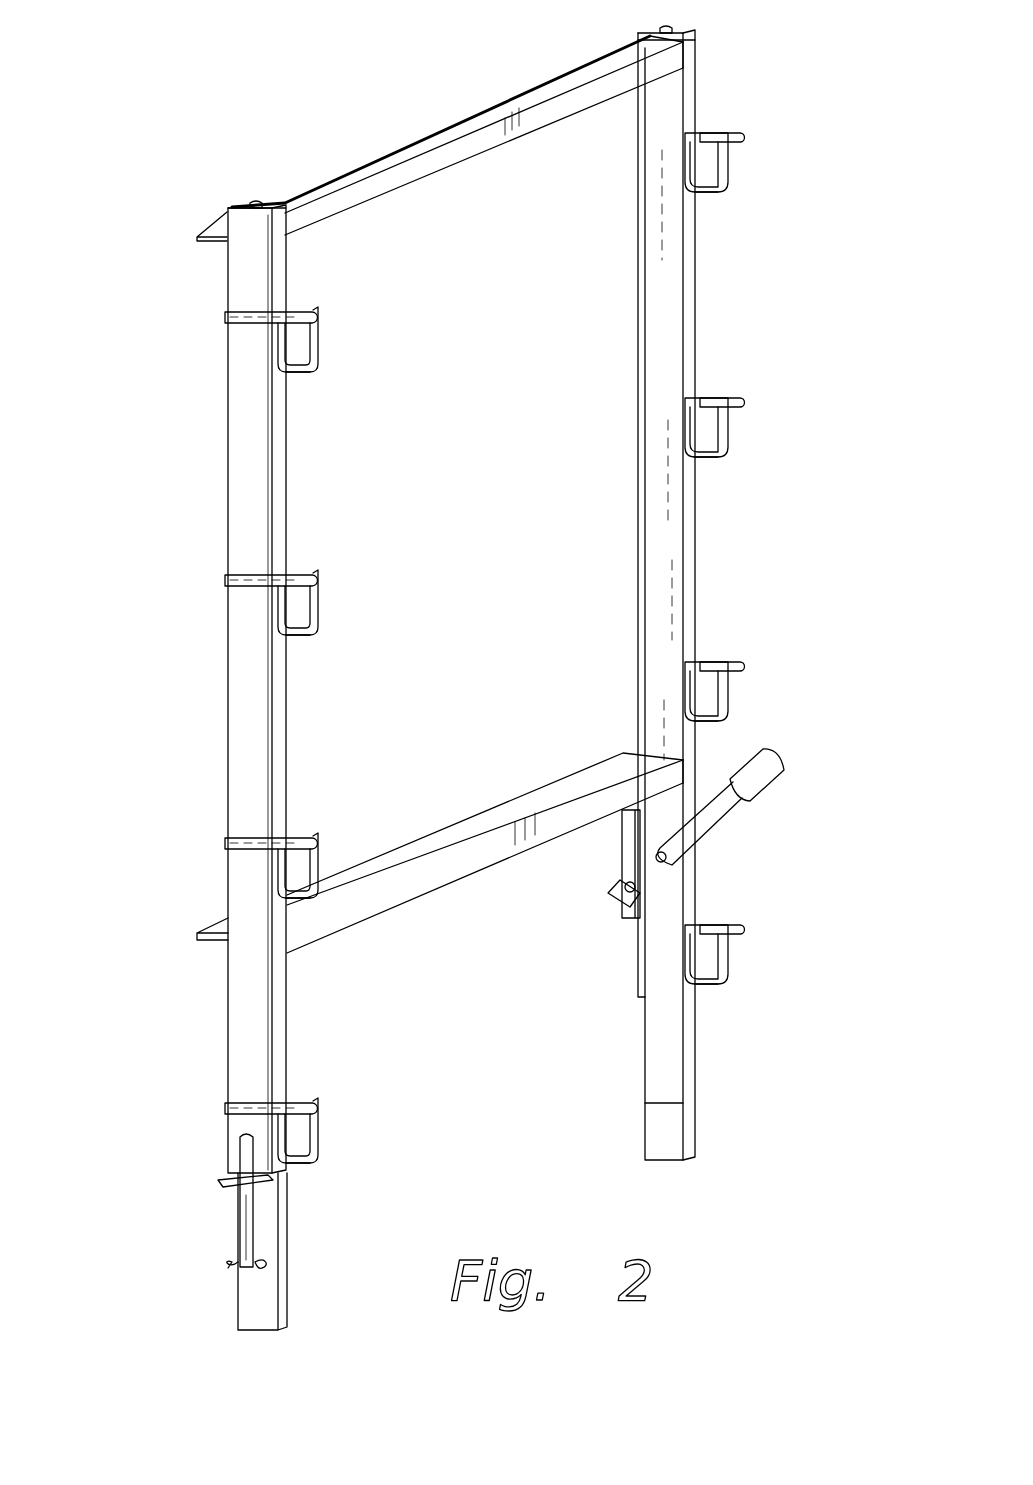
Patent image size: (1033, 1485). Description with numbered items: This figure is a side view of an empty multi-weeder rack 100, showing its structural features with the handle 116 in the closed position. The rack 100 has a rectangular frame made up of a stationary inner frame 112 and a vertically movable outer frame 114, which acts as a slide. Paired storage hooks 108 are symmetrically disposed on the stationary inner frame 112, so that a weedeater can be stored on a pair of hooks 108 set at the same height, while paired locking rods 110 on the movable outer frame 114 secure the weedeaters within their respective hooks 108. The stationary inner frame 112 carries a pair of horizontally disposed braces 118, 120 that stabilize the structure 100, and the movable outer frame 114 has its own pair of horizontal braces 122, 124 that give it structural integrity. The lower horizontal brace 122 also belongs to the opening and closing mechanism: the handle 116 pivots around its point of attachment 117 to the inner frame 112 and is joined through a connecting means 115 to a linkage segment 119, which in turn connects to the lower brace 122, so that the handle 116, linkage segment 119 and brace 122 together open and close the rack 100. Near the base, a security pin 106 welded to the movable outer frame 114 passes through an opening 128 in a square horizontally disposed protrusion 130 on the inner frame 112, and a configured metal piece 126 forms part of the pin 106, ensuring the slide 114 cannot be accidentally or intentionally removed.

The multi-weeder rack 100 is at (200, 556).
The security pin 106 is at (245, 1228).
The storage hook 108 is at (320, 1125).
The locking rod 110 is at (735, 935).
The stationary inner frame 112 is at (665, 1128).
The vertically movable outer frame 114 is at (232, 805).
The connecting means 115 is at (612, 893).
The handle 116 is at (765, 770).
The point of attachment 117 is at (672, 850).
The horizontal brace 118 is at (375, 905).
The linkage segment 119 is at (628, 855).
The horizontal brace 120 is at (375, 188).
The lower horizontal brace 122 is at (213, 930).
The horizontal brace 124 is at (213, 236).
The configured metal piece 126 is at (262, 1257).
The opening 128 is at (222, 1170).
The square horizontally disposed protrusion 130 is at (232, 1185).